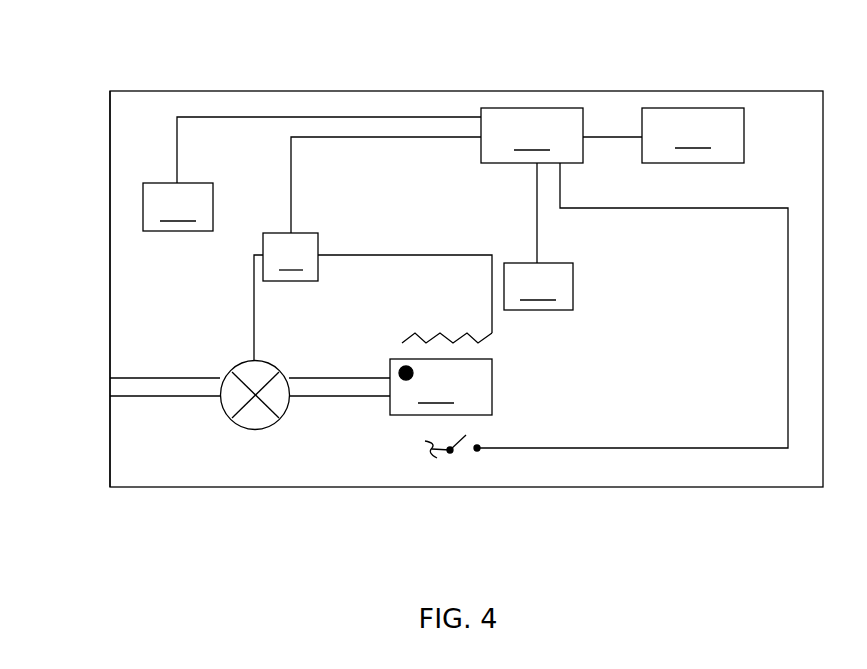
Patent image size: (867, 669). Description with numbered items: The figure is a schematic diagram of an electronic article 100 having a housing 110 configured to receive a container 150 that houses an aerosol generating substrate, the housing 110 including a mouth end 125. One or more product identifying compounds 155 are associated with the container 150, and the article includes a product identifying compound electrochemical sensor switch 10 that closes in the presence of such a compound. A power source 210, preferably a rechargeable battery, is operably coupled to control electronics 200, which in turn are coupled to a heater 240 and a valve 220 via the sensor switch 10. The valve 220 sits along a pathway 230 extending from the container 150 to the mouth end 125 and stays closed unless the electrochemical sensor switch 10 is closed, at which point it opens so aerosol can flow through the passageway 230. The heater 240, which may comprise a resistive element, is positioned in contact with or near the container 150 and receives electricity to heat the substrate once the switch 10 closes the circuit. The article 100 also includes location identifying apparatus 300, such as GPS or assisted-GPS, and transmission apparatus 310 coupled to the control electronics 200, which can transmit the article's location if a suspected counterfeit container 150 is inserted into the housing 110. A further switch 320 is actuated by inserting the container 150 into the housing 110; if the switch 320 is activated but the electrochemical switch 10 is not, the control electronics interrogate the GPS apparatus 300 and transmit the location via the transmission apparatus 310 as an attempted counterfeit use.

The electronic article 100 is at (218, 64).
The housing 110 is at (708, 90).
The mouth end 125 is at (110, 277).
The product identifying compound electrochemical sensor switch 10 is at (373, 297).
The control electronics 200 is at (482, 279).
The power source 210 is at (693, 135).
The location identifying apparatus 300 is at (538, 286).
The transmission apparatus 310 is at (178, 207).
The container 150 is at (441, 387).
The product identifying compound 155 is at (400, 367).
The heater 240 is at (441, 333).
The valve 220 is at (257, 429).
The pathway 230 is at (142, 394).
The switch 320 is at (455, 469).